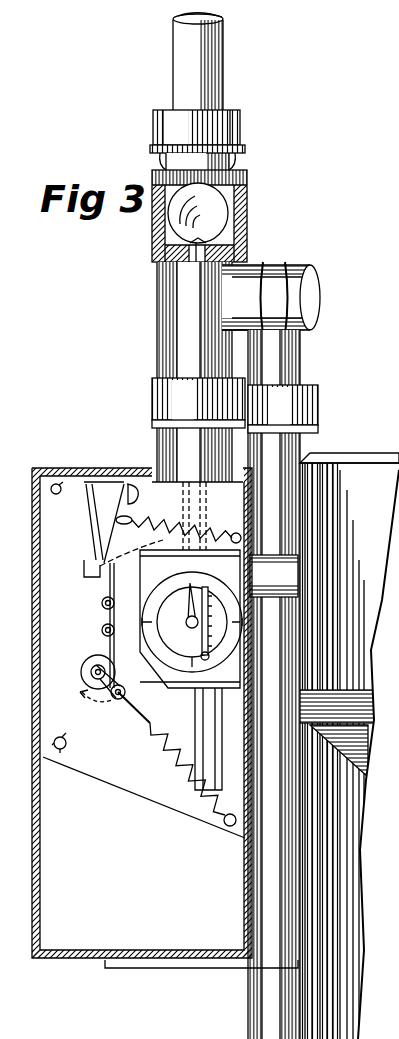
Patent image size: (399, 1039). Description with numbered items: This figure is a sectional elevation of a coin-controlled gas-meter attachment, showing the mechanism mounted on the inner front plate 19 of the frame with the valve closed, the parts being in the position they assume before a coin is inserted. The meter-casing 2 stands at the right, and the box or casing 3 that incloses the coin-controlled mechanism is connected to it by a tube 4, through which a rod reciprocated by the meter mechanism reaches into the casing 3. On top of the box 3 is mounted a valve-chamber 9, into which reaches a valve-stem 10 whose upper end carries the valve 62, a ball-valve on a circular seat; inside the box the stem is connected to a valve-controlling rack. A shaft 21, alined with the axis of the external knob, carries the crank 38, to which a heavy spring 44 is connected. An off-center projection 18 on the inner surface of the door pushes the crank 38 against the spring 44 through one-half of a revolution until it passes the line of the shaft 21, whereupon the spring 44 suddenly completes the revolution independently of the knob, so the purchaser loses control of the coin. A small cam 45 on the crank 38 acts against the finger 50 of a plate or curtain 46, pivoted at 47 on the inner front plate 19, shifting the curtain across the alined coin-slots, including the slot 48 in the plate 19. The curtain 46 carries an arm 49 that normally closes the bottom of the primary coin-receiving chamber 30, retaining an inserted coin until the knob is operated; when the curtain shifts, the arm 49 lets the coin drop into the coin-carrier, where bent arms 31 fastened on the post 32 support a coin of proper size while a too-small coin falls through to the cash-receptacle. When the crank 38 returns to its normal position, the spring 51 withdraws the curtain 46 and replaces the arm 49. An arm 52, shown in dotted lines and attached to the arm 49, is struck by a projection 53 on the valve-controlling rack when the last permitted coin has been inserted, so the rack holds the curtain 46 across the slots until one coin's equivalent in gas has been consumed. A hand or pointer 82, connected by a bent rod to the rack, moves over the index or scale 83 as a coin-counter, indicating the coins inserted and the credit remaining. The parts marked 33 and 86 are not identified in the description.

The meter-casing 2 is at (348, 746).
The box or casing 3 is at (155, 718).
The tube 4 is at (274, 576).
The valve-chamber 9 is at (206, 216).
The valve-stem 10 is at (294, 455).
The off-center projection 18 is at (125, 694).
The inner front plate 19 is at (144, 785).
The shaft 21 is at (90, 672).
The primary coin-receiving chamber 30 is at (92, 482).
The bent arms 31 is at (192, 622).
The post 32 is at (65, 748).
The rod 33 is at (214, 755).
The crank 38 is at (118, 680).
The spring 44 is at (177, 759).
The cam 45 is at (88, 664).
The curtain 46 is at (100, 522).
The pivot 47 is at (102, 630).
The coin-slot 48 is at (97, 548).
The arm 49 is at (95, 568).
The finger 50 is at (121, 625).
The spring 51 is at (225, 529).
The arm 52 is at (178, 521).
The projection 53 is at (185, 566).
The valve 62 is at (198, 213).
The pointer 82 is at (209, 660).
The scale 83 is at (220, 613).
The pointer 86 is at (183, 615).